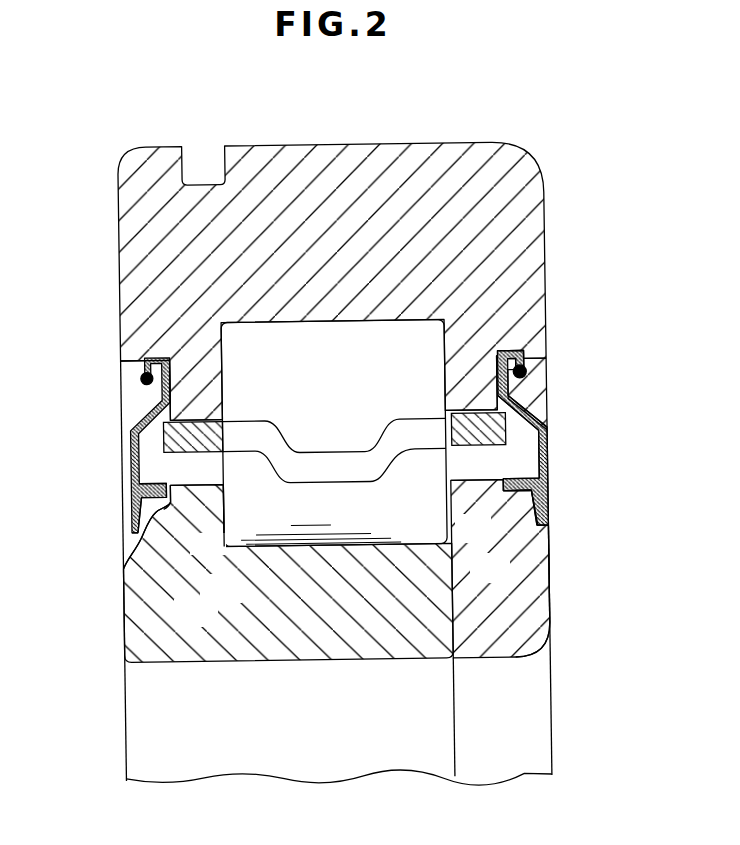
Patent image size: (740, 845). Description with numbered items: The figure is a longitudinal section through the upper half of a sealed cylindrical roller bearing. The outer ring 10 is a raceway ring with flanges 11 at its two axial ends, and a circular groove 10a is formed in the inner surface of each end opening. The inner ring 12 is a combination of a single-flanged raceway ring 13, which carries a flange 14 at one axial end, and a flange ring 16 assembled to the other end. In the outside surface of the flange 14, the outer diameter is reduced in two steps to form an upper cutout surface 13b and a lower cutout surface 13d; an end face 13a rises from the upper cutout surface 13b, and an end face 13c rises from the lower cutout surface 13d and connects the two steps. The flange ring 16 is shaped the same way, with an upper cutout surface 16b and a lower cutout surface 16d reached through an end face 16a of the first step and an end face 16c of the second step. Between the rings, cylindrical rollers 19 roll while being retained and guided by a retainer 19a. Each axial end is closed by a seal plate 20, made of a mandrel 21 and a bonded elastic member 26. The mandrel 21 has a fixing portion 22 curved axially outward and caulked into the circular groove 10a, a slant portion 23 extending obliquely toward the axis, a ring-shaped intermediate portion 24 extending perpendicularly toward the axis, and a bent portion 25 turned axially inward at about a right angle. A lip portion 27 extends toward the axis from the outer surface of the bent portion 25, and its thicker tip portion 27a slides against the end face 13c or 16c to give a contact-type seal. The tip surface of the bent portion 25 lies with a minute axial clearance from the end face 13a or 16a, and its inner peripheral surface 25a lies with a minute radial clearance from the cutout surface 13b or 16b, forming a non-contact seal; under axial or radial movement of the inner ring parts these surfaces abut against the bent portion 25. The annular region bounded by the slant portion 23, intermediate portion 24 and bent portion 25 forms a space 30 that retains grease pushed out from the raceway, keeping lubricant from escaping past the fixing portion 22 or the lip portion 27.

The outer ring 10 is at (305, 158).
The circular groove 10a is at (146, 357).
The flange 11 is at (205, 403).
The inner ring 12 is at (265, 662).
The single-flanged raceway ring 13 is at (343, 663).
The end face of the first step 13a is at (172, 498).
The upper cutout surface 13b is at (152, 523).
The end face of the second step 13c is at (150, 530).
The lower cutout surface 13d is at (123, 565).
The flange 14 is at (225, 494).
The flange ring 16 is at (513, 647).
The end face of the first step 16a is at (497, 494).
The upper cutout surface 16b is at (507, 497).
The end face of the second step 16c is at (550, 562).
The lower cutout surface 16d is at (550, 553).
The cylindrical roller 19 is at (358, 336).
The retainer 19a is at (343, 462).
The seal plate 20 is at (130, 425).
The mandrel 21 is at (548, 437).
The fixing portion 22 is at (527, 362).
The slant portion 23 is at (530, 412).
The intermediate portion 24 is at (548, 458).
The bent portion 25 is at (160, 483).
The inner peripheral surface 25a is at (543, 492).
The elastic member 26 is at (545, 477).
The lip portion 27 is at (132, 500).
The tip portion 27a is at (128, 525).
The space 30 is at (150, 456).